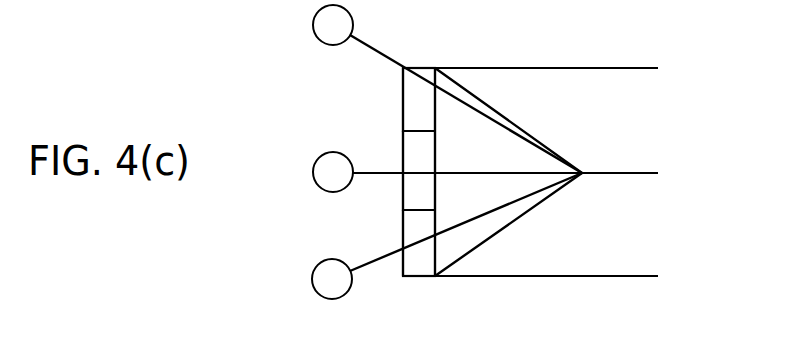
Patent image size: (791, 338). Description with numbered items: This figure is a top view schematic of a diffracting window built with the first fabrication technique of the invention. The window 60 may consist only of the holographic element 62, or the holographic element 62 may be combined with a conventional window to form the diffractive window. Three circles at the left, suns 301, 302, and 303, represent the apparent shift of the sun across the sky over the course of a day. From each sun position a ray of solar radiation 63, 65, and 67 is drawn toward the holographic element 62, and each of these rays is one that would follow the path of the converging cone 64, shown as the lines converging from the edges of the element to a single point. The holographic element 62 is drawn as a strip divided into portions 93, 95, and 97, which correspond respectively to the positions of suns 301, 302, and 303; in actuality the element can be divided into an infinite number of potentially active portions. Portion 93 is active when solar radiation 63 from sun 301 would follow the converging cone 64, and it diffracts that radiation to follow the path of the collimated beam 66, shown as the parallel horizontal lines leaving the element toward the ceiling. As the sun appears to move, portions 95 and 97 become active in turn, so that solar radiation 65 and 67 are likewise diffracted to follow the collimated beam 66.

The sun 301 is at (313, 26).
The sun 302 is at (313, 172).
The sun 303 is at (312, 280).
The window 60 is at (418, 277).
The holographic element 62 is at (419, 66).
The solar radiation 63 is at (372, 42).
The converging cone 64 is at (492, 132).
The solar radiation 65 is at (393, 171).
The collimated beam 66 is at (592, 72).
The solar radiation 67 is at (383, 253).
The portion of holographic element 93 is at (402, 98).
The portion of holographic element 95 is at (402, 182).
The portion of holographic element 97 is at (398, 268).